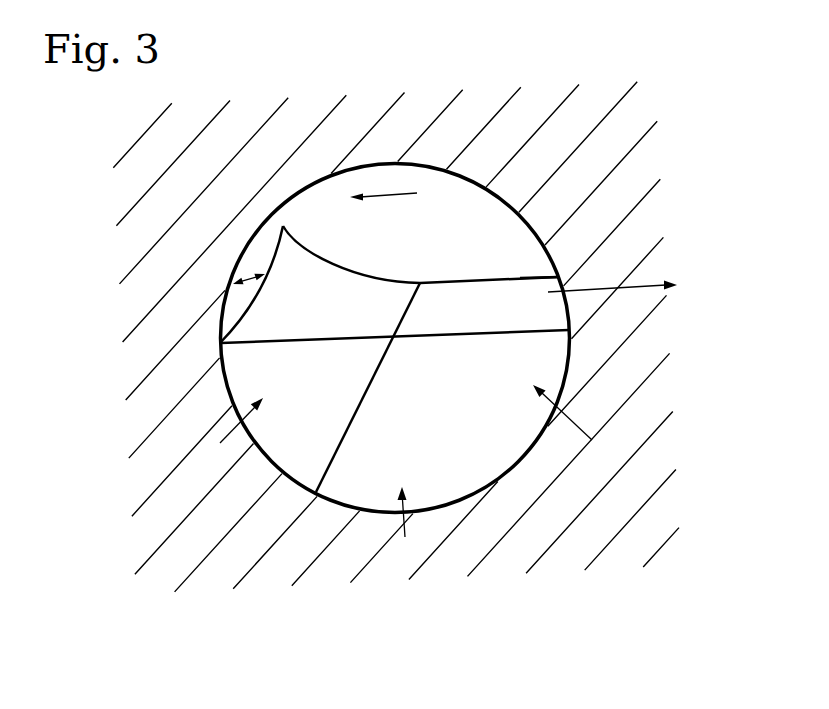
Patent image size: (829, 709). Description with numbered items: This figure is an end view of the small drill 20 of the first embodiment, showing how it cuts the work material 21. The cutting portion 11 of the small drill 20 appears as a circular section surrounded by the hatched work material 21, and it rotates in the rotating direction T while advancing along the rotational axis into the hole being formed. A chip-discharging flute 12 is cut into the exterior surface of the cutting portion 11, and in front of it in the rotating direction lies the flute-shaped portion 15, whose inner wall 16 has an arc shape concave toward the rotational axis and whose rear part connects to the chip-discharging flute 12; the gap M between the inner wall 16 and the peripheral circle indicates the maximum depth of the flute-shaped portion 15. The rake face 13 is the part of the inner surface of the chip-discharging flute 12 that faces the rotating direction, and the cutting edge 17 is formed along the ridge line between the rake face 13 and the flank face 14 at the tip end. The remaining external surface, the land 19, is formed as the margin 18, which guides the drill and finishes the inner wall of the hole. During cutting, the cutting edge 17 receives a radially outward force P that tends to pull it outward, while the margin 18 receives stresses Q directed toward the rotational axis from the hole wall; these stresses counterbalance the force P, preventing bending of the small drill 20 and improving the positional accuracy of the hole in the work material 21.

The cutting portion 11 is at (520, 481).
The chip-discharging flute 12 is at (400, 249).
The rake face 13 is at (442, 280).
The flank face 14 is at (282, 328).
The flute-shaped portion 15 is at (230, 280).
The inner wall 16 is at (245, 315).
The cutting edge 17 is at (523, 278).
The margin 18 is at (337, 500).
The land 19 is at (285, 492).
The small drill 20 is at (455, 515).
The work material 21 is at (623, 495).